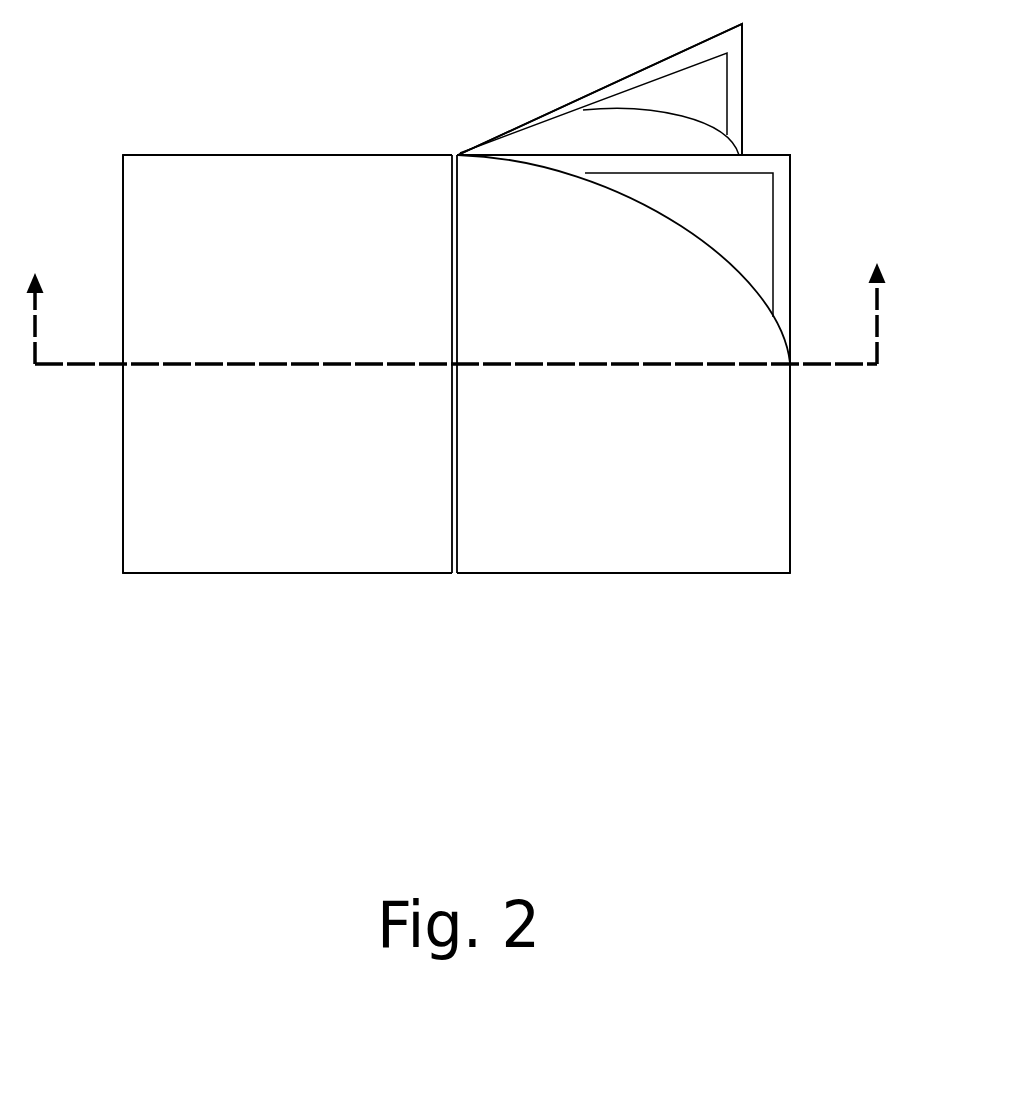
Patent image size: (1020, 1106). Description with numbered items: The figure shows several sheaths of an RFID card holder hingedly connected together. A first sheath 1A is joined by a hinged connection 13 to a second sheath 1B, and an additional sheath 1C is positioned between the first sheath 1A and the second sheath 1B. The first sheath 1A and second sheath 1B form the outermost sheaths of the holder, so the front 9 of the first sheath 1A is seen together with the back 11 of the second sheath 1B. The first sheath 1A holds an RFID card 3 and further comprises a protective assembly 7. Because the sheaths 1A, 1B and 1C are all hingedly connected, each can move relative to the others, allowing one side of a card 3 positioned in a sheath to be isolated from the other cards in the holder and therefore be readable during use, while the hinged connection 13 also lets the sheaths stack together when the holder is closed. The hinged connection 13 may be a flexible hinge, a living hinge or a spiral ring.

The first sheath 1A is at (522, 573).
The second sheath 1B is at (245, 573).
The additional sheath 1C is at (640, 70).
The RFID card 3 is at (698, 87).
The protective assembly 7 is at (730, 42).
The sheath front 9 is at (667, 500).
The sheath back 11 is at (153, 433).
The hinged connection 13 is at (452, 495).